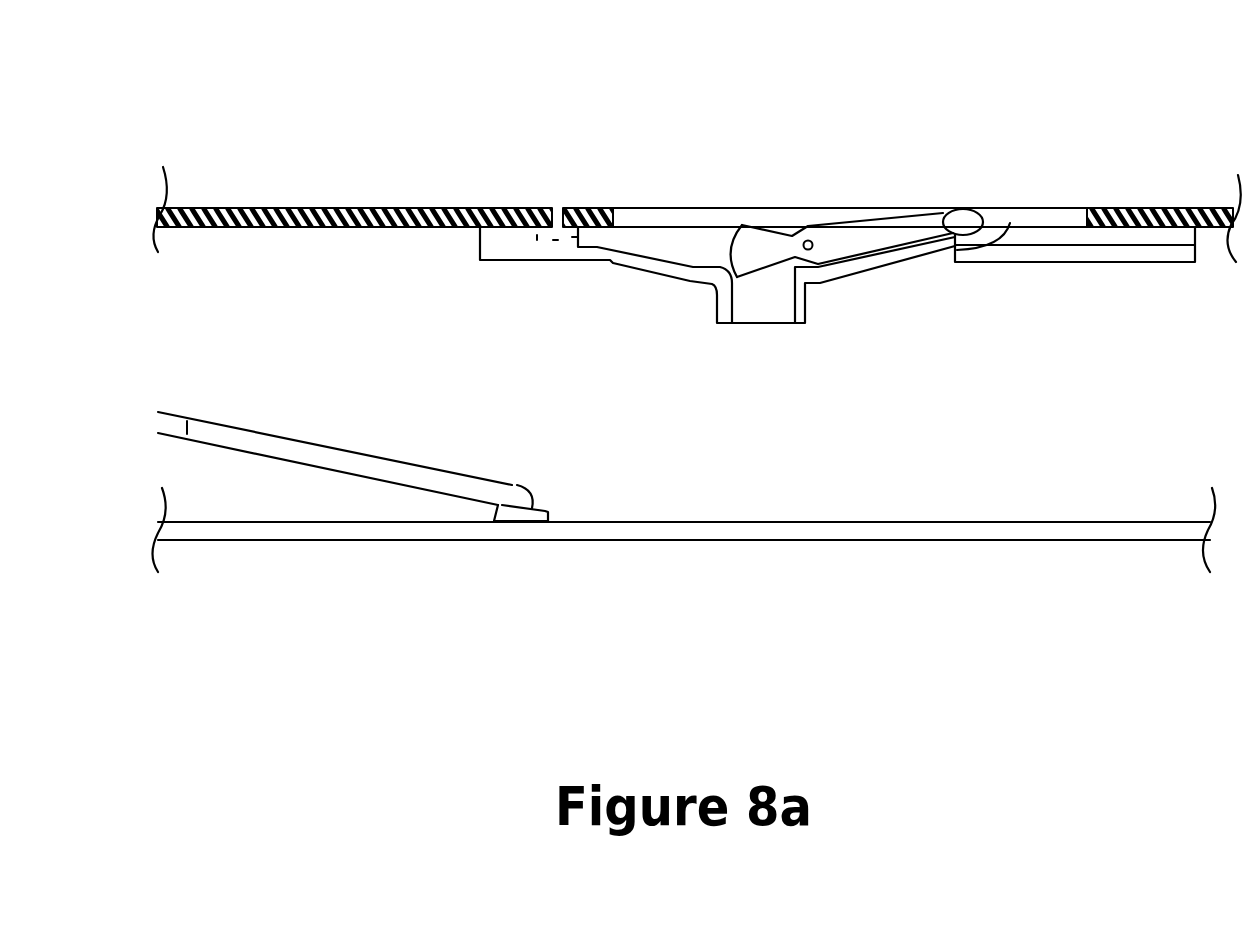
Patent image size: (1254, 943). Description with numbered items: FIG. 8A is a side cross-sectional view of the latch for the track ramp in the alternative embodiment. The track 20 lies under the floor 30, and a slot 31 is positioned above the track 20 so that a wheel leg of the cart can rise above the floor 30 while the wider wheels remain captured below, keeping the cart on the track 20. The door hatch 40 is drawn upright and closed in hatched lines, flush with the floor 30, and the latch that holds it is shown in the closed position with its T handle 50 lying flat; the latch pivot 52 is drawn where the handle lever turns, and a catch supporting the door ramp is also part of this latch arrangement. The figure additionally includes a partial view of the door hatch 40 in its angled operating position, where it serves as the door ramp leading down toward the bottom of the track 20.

The track 20 is at (288, 365).
The floor 30 is at (1170, 205).
The slot 31 is at (508, 247).
The door hatch 40 is at (410, 170).
The T handle 50 is at (948, 207).
The lever 52 is at (808, 240).